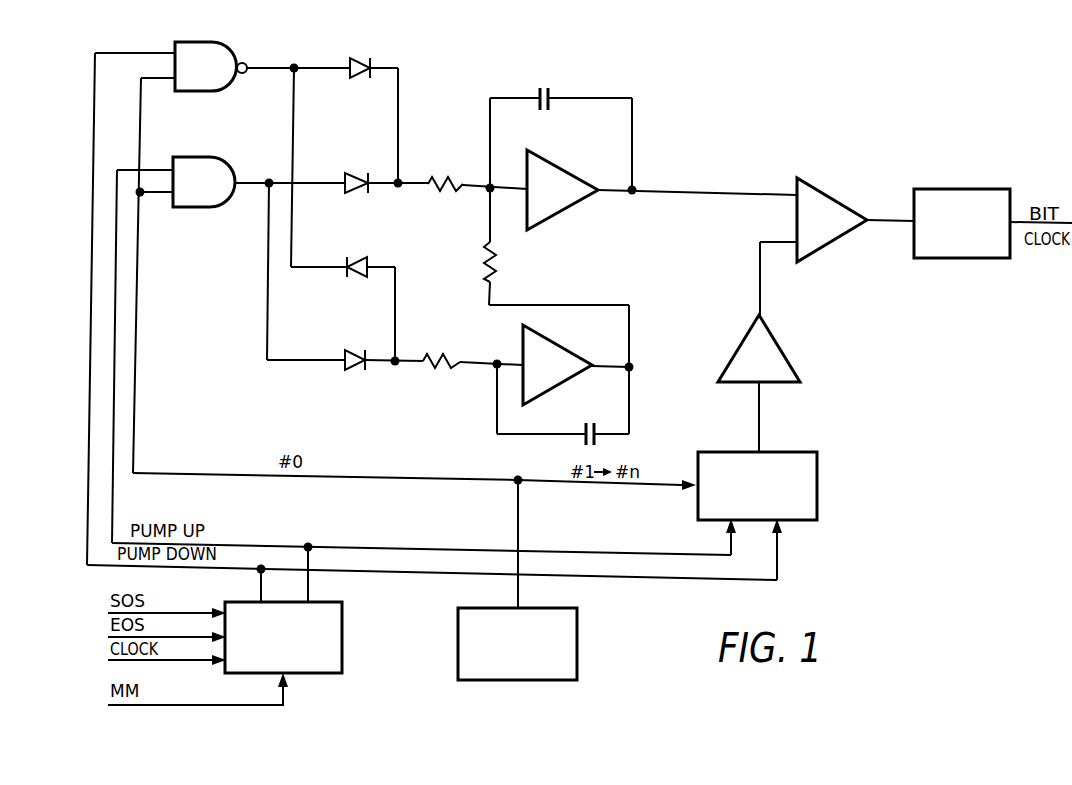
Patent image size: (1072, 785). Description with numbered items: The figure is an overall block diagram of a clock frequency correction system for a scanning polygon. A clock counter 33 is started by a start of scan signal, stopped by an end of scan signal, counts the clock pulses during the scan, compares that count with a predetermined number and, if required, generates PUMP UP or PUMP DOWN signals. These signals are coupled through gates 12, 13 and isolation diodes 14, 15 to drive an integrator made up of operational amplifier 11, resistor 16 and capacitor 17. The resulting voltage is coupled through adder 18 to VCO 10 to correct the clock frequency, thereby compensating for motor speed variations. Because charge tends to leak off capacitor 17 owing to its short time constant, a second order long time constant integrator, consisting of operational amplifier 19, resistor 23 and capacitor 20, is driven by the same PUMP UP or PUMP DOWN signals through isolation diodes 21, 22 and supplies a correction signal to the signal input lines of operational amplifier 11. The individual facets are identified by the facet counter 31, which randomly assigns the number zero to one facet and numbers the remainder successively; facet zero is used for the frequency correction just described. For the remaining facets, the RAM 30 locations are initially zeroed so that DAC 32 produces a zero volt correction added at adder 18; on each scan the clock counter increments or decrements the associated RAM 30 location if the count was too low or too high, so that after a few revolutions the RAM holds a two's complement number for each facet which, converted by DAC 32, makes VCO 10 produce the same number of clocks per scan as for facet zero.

The VCO 10 is at (947, 189).
The operational amplifier 11 is at (558, 167).
The gate 12 is at (217, 42).
The gate 13 is at (200, 157).
The isolation diode 14 is at (360, 60).
The isolation diode 15 is at (350, 173).
The resistor 16 is at (441, 181).
The capacitor 17 is at (547, 88).
The adder 18 is at (833, 195).
The operational amplifier 19 is at (560, 343).
The capacitor 20 is at (584, 425).
The isolation diode 21 is at (358, 257).
The isolation diode 22 is at (357, 350).
The resistor 23 is at (442, 355).
The RAM 30 is at (818, 477).
The facet counter 31 is at (578, 650).
The DAC 32 is at (784, 355).
The clock counter 33 is at (343, 645).